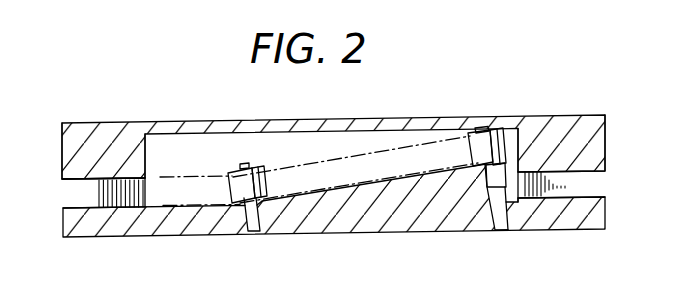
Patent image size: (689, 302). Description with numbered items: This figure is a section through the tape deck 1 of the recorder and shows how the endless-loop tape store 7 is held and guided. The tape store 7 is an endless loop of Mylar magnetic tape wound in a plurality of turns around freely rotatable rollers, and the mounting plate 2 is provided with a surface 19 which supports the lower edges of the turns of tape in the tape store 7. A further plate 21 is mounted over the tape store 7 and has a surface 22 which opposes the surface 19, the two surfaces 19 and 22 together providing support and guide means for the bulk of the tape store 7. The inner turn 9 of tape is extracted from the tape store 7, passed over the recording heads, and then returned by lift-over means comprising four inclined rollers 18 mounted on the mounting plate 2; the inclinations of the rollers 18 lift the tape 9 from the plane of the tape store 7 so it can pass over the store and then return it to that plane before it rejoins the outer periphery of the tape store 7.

The tape deck 1 is at (544, 94).
The mounting plate 2 is at (598, 212).
The tape store 7 is at (80, 195).
The inner turn of tape 9 is at (390, 150).
The inclined rollers 18 is at (257, 176).
The surface 19 is at (104, 212).
The further plate 21 is at (98, 123).
The surface 22 is at (114, 173).